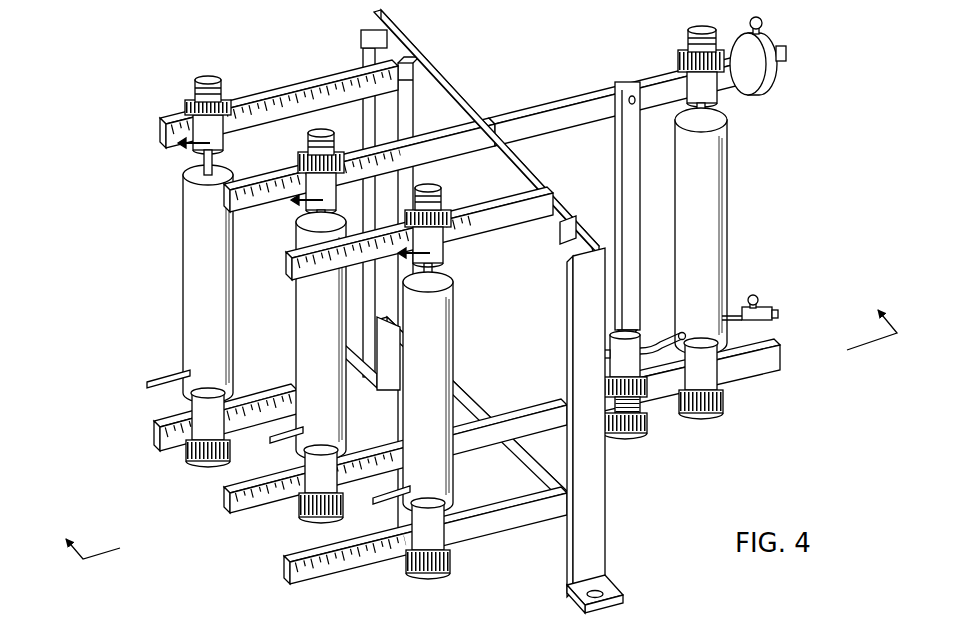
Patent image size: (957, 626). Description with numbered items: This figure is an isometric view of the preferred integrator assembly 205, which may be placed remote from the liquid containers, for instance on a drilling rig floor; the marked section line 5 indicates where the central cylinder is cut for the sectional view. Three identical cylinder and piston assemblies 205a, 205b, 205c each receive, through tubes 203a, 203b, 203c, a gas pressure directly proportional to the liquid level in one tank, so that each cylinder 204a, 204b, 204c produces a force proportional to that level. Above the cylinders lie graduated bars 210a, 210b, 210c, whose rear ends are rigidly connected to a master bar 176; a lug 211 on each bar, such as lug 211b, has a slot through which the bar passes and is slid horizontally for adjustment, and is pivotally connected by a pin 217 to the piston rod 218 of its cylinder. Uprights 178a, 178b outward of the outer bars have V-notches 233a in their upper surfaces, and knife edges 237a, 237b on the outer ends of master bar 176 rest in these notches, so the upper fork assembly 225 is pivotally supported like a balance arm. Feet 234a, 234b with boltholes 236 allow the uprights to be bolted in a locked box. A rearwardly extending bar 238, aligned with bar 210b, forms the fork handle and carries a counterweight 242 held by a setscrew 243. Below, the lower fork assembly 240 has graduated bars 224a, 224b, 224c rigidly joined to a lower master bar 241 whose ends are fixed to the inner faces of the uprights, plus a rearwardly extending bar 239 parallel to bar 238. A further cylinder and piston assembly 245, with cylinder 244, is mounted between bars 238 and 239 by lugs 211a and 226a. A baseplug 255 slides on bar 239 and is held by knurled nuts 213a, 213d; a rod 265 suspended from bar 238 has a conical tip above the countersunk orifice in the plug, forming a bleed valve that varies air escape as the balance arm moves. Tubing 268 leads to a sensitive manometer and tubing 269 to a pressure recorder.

The master bar 176 is at (472, 104).
The upright 178a is at (405, 90).
The upright 178b is at (594, 504).
The tube 203a is at (166, 378).
The tube 203b is at (290, 439).
The tube 203c is at (390, 501).
The cylinder 204a is at (188, 275).
The cylinder 204b is at (300, 374).
The cylinder 204c is at (447, 358).
The integrator assembly 205 is at (598, 80).
The cylinder and piston assembly 205a is at (170, 316).
The cylinder and piston assembly 205b is at (292, 366).
The cylinder and piston assembly 205c is at (456, 403).
The graduated bar 210a is at (258, 99).
The graduated bar 210b is at (258, 183).
The graduated bar 210c is at (524, 222).
The lug 211 is at (199, 80).
The lug 211a is at (683, 32).
The lug 211b is at (340, 142).
The knurled nut 213a is at (659, 406).
The knurled nut 213d is at (648, 396).
The pin 217 is at (340, 199).
The piston rod 218 is at (200, 168).
The graduated bar 224a is at (158, 434).
The graduated bar 224b is at (222, 505).
The graduated bar 224c is at (287, 575).
The upper fork assembly 225 is at (193, 250).
The lug 226a is at (721, 421).
The V-notch 233a is at (372, 31).
The foot 234a is at (345, 330).
The foot 234b is at (621, 587).
The bolthole 236 is at (604, 586).
The knife edge 237a is at (366, 50).
The knife edge 237b is at (568, 252).
The rearwardly extending bar 238 is at (530, 108).
The rearwardly extending bar 239 is at (770, 368).
The lower fork assembly 240 is at (172, 481).
The master bar 241 is at (478, 412).
The counterweight 242 is at (779, 78).
The setscrew 243 is at (764, 23).
The cylinder 244 is at (728, 227).
The cylinder and piston assembly 245 is at (729, 282).
The baseplug 255 is at (642, 330).
The rod 265 is at (620, 163).
The tubing 268 is at (760, 296).
The tubing 269 is at (778, 300).
The section line 5- 5 is at (477, 423).